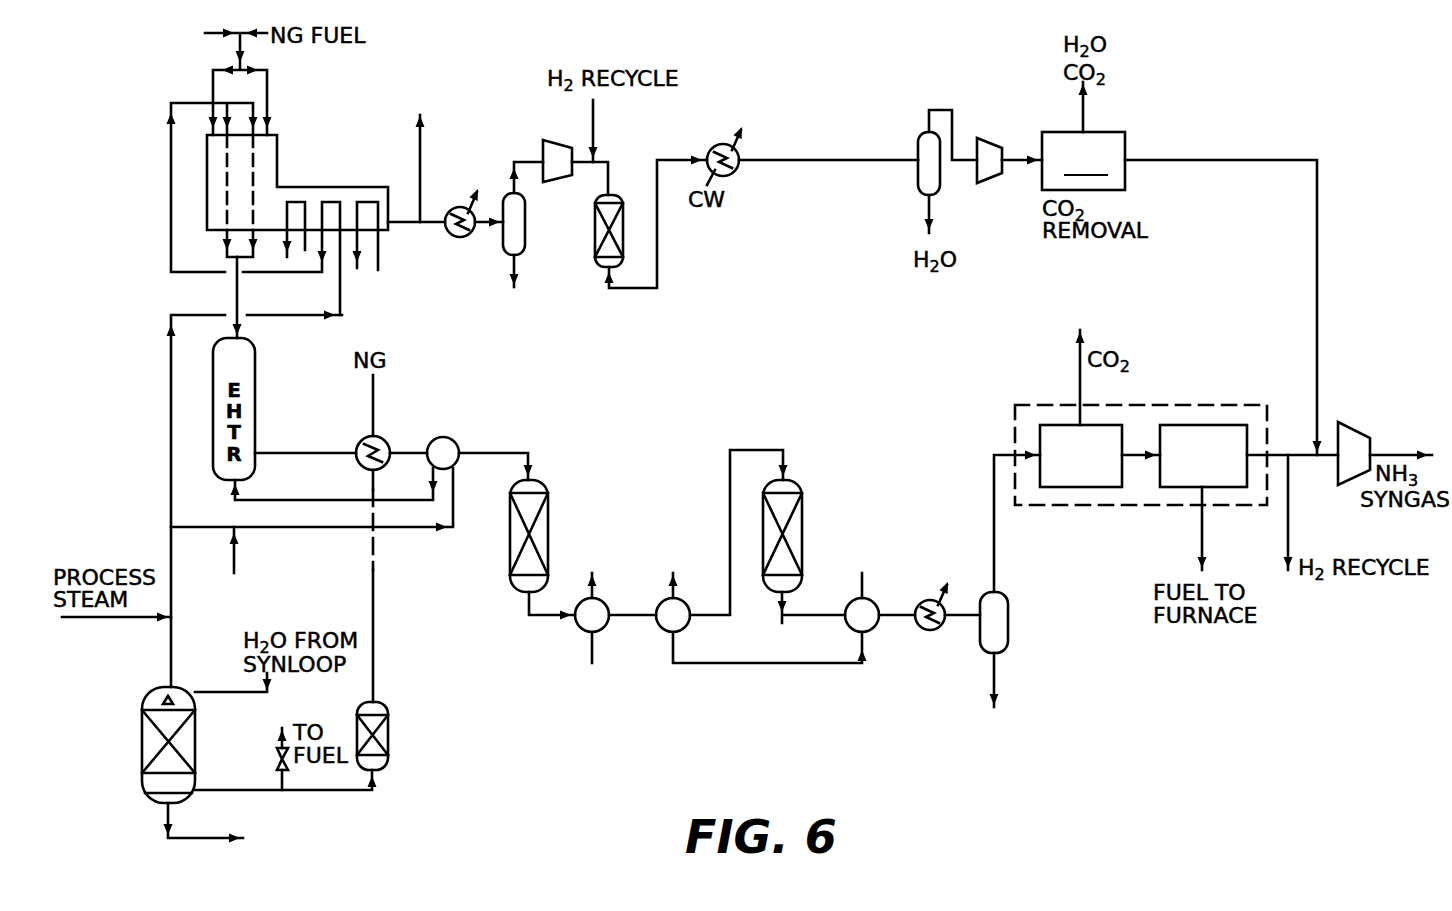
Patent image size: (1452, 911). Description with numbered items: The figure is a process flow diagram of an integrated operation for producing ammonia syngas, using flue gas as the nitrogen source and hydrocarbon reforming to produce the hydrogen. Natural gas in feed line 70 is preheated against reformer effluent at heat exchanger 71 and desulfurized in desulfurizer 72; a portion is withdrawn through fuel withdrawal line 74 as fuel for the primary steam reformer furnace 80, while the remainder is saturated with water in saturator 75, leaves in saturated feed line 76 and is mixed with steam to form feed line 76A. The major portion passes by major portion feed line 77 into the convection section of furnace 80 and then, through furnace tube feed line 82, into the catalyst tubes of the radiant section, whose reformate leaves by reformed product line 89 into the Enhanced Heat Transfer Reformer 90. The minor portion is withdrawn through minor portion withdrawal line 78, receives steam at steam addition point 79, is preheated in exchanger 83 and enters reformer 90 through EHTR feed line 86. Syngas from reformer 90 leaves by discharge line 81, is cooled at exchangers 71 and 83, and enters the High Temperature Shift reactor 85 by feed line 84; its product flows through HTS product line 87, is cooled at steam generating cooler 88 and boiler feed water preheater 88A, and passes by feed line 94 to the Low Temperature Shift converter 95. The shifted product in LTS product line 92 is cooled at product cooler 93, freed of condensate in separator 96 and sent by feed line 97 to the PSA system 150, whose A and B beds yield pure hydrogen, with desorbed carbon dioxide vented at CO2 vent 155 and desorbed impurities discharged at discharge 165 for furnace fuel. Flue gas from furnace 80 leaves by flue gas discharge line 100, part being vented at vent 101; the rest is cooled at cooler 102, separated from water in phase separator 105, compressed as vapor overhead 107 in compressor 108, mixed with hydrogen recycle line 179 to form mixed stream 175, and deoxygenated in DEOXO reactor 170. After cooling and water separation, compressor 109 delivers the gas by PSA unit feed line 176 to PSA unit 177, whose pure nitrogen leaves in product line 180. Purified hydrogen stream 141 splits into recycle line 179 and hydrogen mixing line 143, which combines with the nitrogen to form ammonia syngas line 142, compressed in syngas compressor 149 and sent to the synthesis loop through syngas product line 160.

The desorbed product discharge 165 is at (207, 33).
The furnace tube feed line 82 is at (167, 163).
The primary steam reformer furnace 80 is at (278, 173).
The reformed product line 89 is at (243, 300).
The major portion feed line 77 is at (170, 405).
The flue gas discharge line 100 is at (403, 224).
The flue gas vent 101 is at (422, 152).
The flue gas cooler 102 is at (468, 233).
The phase separator 105 is at (527, 238).
The vapor overhead line 107 is at (522, 160).
The flue gas compressor 108 is at (576, 152).
The hydrogen recycle line 179 is at (596, 108).
The mixed flue gas stream 175 is at (613, 170).
The DEOXO reactor 170 is at (593, 238).
The nitrogen compressor 109 is at (983, 185).
The PSA unit feed line 176 is at (1018, 154).
The PSA unit 177 is at (1083, 136).
The pure nitrogen product line 180 is at (1222, 157).
The Enhanced Heat Transfer Reformer 90 is at (257, 404).
The natural gas feed line 70 is at (381, 401).
The feed preheat exchanger 71 is at (357, 447).
The EHTR syngas discharge line 81 is at (287, 452).
The minor portion preheat exchanger 83 is at (470, 428).
The HTS reactor feed line 84 is at (520, 448).
The EHTR feed line 86 is at (329, 498).
The minor portion withdrawal line 78 is at (330, 529).
The steam addition point 79 is at (237, 571).
The feed line 76A is at (141, 594).
The saturated feed line 76 is at (175, 648).
The saturator 75 is at (138, 752).
The fuel withdrawal line 74 is at (277, 742).
The desulfurizer 72 is at (390, 735).
The High Temperature Shift reactor 85 is at (552, 513).
The HTS product line 87 is at (525, 610).
The steam generating cooler 88 is at (607, 627).
The boiler feed water preheater 88A is at (690, 627).
The LTS converter feed line 94 is at (727, 532).
The Low Temperature Shift converter 95 is at (803, 529).
The LTS product line 92 is at (813, 613).
The product cooler 93 is at (923, 632).
The condensate separator 96 is at (1008, 613).
The PSA system feed line 97 is at (997, 543).
The PSA system 150 is at (1127, 506).
The CO2 vent 155 is at (1080, 357).
The purified hydrogen stream 141 is at (1282, 452).
The ammonia syngas line 142 is at (1326, 452).
The hydrogen mixing line 143 is at (1302, 458).
The syngas compressor 149 is at (1341, 483).
The syngas product line 160 is at (1410, 453).